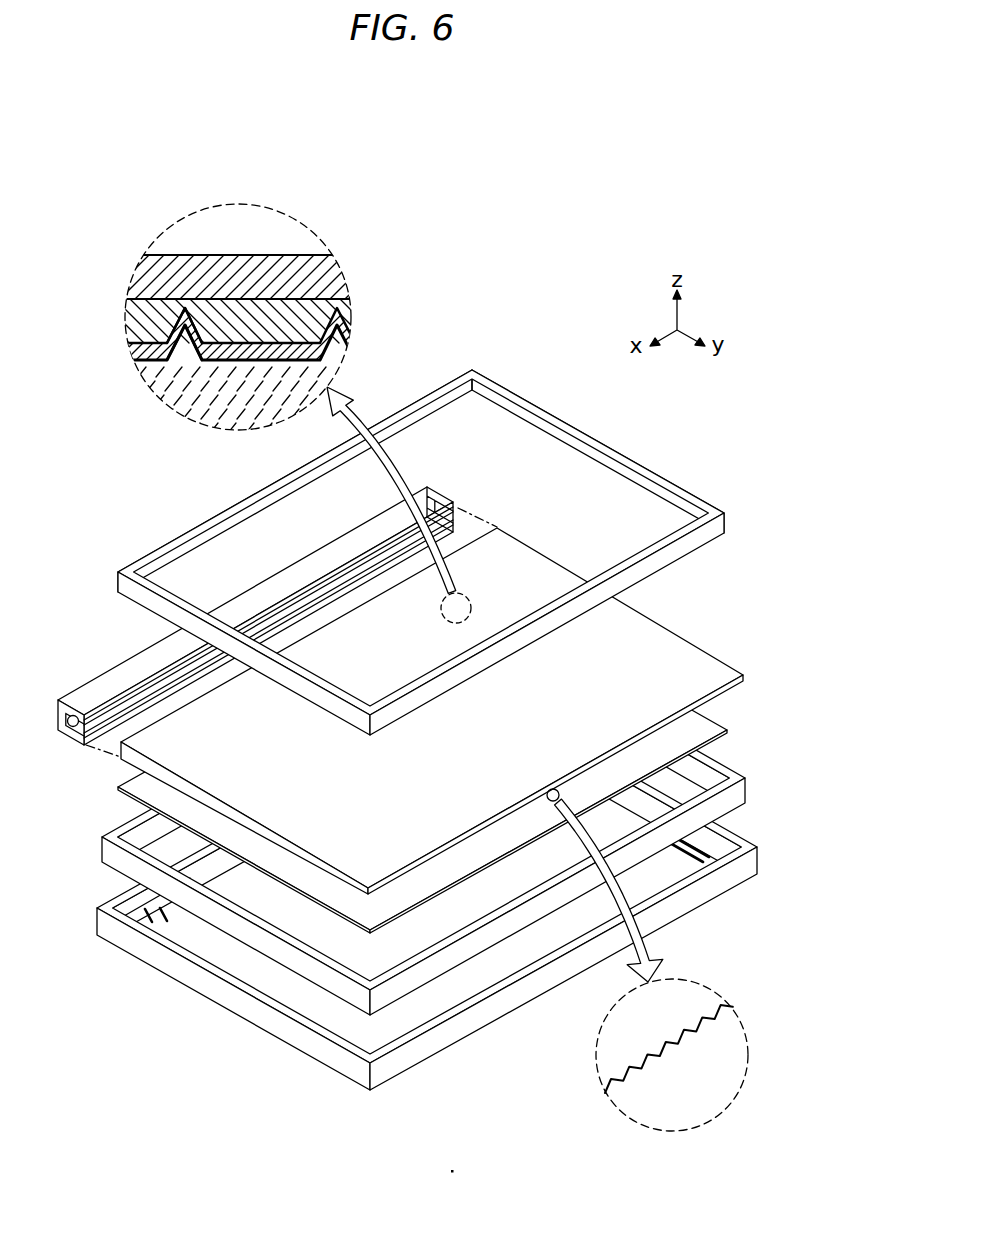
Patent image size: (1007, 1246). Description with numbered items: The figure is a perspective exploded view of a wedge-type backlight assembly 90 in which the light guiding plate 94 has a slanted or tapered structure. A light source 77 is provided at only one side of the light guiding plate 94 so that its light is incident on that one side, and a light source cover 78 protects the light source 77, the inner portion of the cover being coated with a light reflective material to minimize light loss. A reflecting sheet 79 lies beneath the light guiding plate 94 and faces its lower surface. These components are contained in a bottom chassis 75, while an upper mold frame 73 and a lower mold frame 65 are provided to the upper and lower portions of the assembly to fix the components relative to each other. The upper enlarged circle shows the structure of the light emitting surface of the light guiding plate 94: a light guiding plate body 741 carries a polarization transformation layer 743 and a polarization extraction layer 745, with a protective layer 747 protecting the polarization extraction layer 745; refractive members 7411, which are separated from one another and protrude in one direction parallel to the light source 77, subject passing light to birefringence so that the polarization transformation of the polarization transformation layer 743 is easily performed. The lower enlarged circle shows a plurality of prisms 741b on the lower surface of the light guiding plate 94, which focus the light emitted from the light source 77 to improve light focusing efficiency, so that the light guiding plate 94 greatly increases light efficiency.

The lower mold frame 65 is at (758, 850).
The bottom chassis 75 is at (738, 793).
The reflecting sheet 79 is at (715, 733).
The light guiding plate 94 is at (680, 632).
The light source cover 78 is at (94, 680).
The light source 77 is at (73, 727).
The upper mold frame 73 is at (707, 535).
The backlight assembly 90 is at (262, 386).
The protective layer 747 is at (150, 277).
The polarization extraction layer 745 is at (140, 322).
The polarization transformation layer 743 is at (140, 349).
The refractive members 7411 is at (207, 338).
The light guiding plate body 741 is at (177, 393).
The prisms 741b is at (676, 1045).